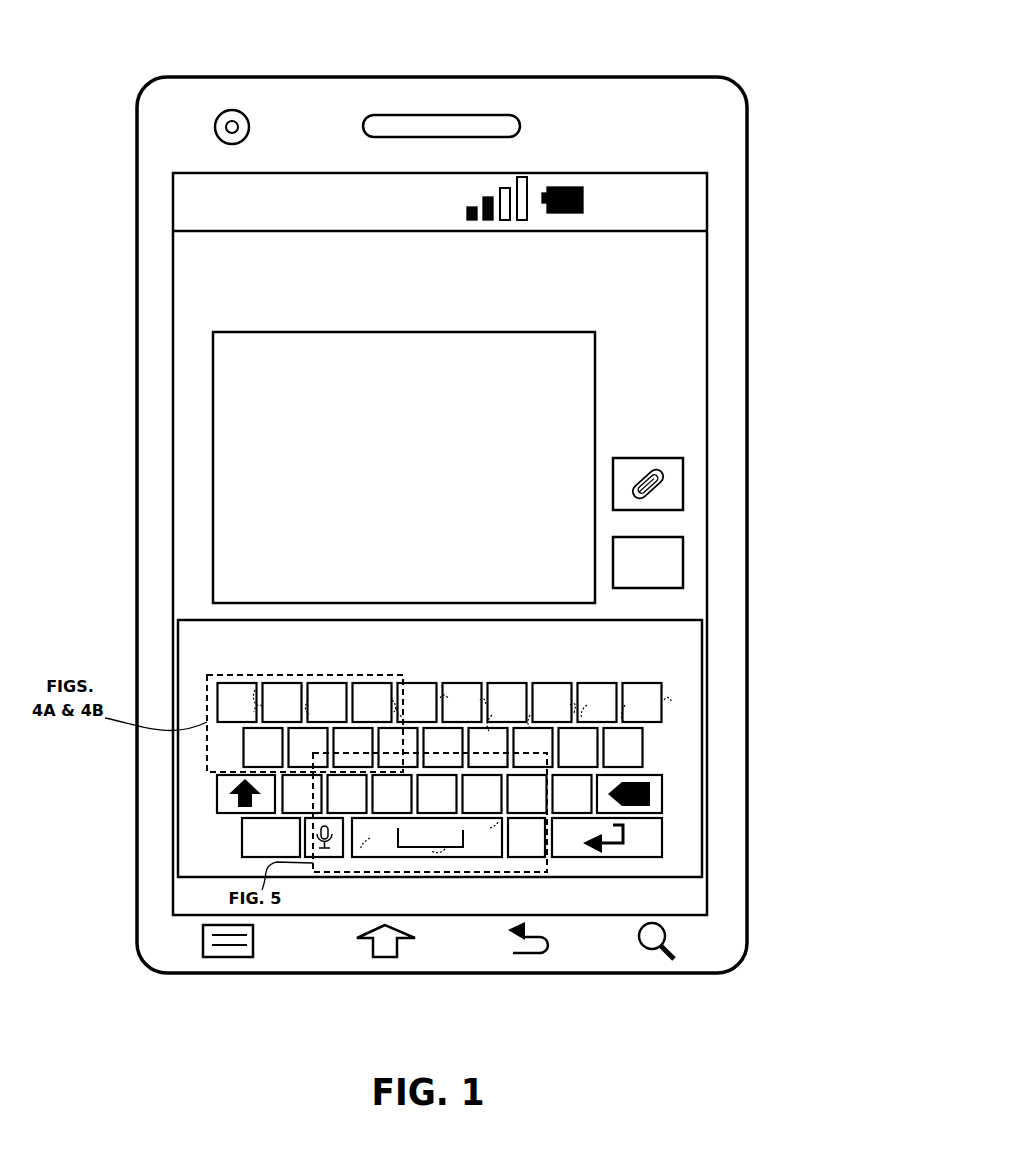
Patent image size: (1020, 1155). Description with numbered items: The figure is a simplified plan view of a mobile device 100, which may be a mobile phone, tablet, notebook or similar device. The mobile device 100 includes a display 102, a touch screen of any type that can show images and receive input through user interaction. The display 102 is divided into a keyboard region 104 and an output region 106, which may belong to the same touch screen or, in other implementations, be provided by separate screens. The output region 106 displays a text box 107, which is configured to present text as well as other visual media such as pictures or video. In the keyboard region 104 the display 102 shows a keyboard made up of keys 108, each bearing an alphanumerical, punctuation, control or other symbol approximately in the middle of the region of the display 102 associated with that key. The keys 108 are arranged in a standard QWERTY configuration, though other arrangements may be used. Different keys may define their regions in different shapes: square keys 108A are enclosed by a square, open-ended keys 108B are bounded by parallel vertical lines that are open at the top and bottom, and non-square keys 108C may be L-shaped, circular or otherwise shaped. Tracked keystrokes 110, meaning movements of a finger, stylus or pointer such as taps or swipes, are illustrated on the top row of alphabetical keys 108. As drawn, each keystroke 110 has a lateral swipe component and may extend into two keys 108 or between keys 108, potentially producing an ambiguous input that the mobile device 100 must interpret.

The mobile device 100 is at (203, 66).
The display 102 is at (160, 228).
The keyboard region 104 is at (190, 655).
The output region 106 is at (634, 386).
The text box 107 is at (389, 474).
The keys 108 is at (216, 785).
The square keys 108A is at (597, 650).
The open-ended keys 108B is at (663, 702).
The non-square keys 108C is at (657, 774).
The keystroke 110 is at (252, 690).